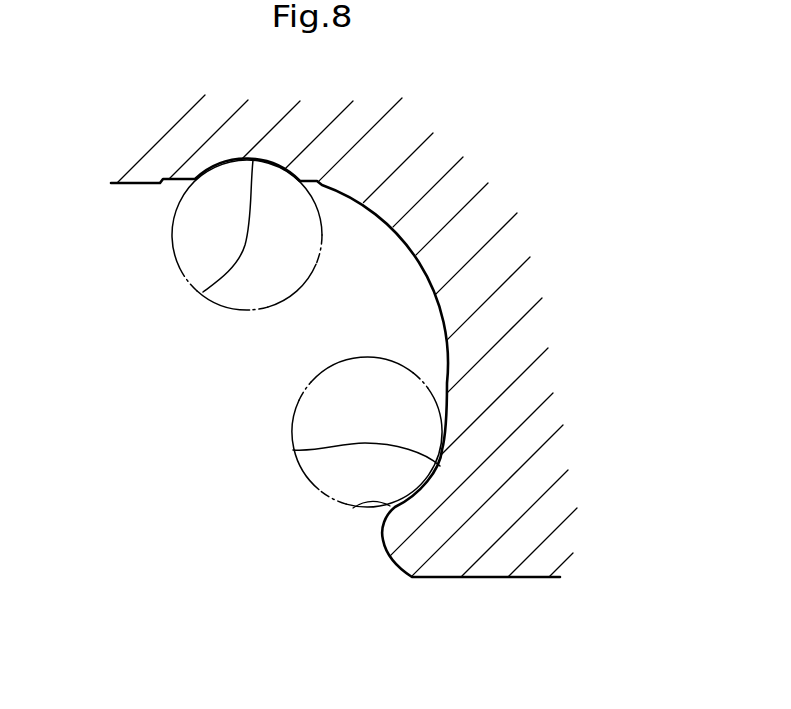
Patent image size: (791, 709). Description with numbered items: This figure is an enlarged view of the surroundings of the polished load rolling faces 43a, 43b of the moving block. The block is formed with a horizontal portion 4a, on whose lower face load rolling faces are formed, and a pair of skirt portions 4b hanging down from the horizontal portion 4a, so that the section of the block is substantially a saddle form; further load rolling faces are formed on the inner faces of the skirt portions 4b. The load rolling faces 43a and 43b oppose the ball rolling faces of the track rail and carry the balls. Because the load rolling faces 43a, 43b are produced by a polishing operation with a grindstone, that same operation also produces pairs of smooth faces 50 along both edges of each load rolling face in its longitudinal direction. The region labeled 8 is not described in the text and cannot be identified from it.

The raceway groove 8 is at (391, 572).
The horizontal portion 4a is at (153, 162).
The skirt portion 4b is at (466, 553).
The load rolling face 43a is at (293, 450).
The load rolling face 43b is at (203, 292).
The smooth face 50 is at (175, 183).